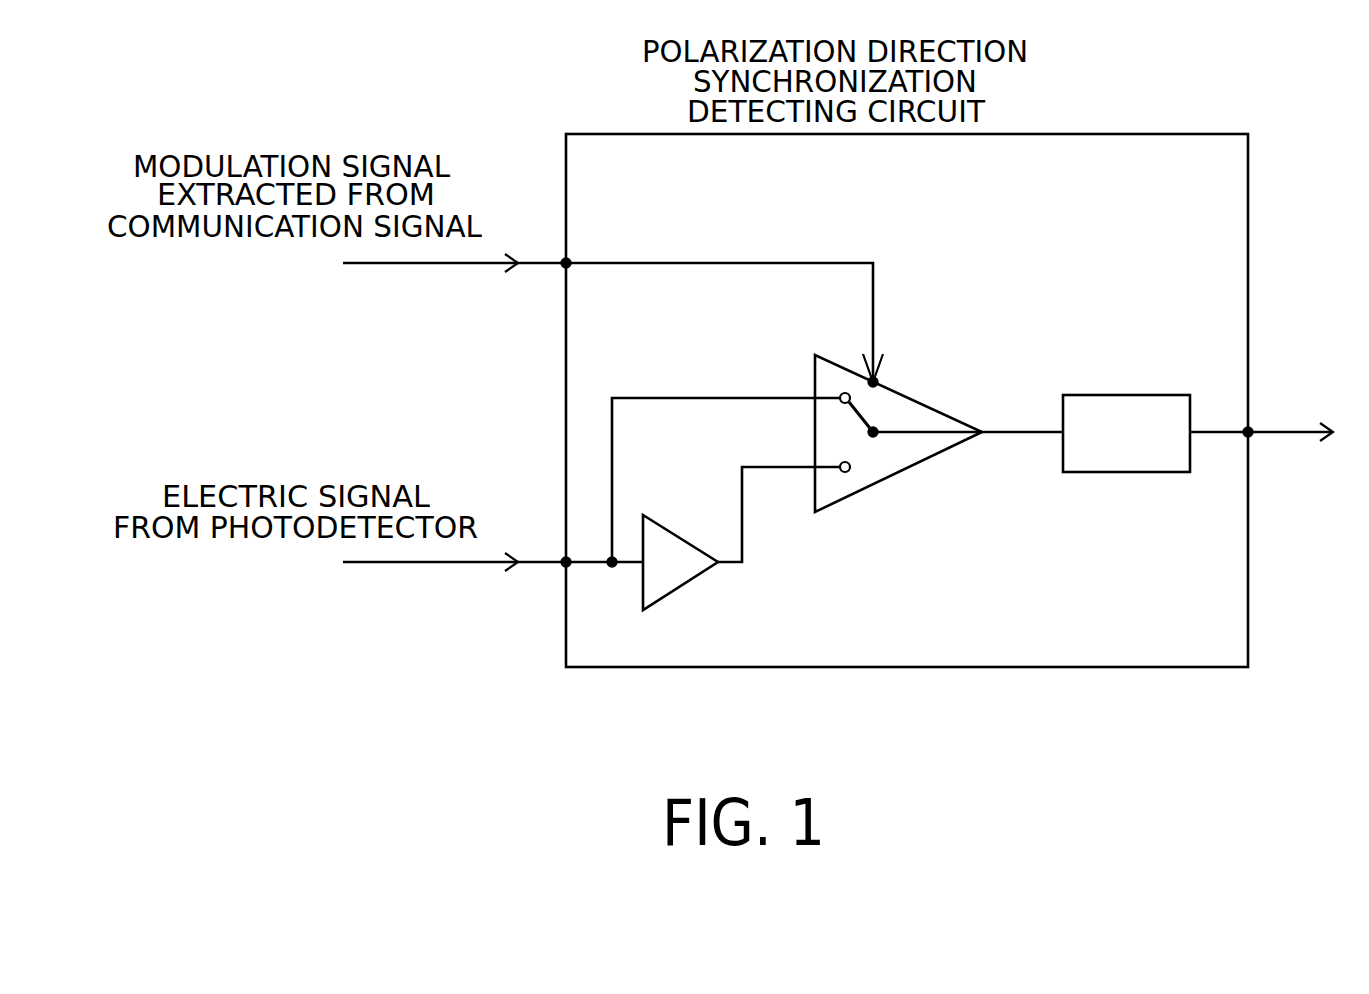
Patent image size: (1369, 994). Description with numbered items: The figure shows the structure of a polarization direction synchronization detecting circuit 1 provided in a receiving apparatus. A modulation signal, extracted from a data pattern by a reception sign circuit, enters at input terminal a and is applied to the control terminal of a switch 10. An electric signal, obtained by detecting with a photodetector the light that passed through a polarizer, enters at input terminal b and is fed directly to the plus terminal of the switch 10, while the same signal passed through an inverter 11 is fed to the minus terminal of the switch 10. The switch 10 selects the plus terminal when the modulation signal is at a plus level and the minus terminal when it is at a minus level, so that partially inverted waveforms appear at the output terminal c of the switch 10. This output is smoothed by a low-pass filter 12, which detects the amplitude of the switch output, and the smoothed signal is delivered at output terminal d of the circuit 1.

The polarization direction synchronization detecting circuit 1 is at (1128, 134).
The switch 10 is at (855, 498).
The inverter 11 is at (672, 595).
The low-pass filter 12 is at (1117, 395).
The input terminal a is at (560, 260).
The input terminal b is at (560, 559).
The output terminal c is at (1020, 436).
The output terminal d is at (1250, 427).